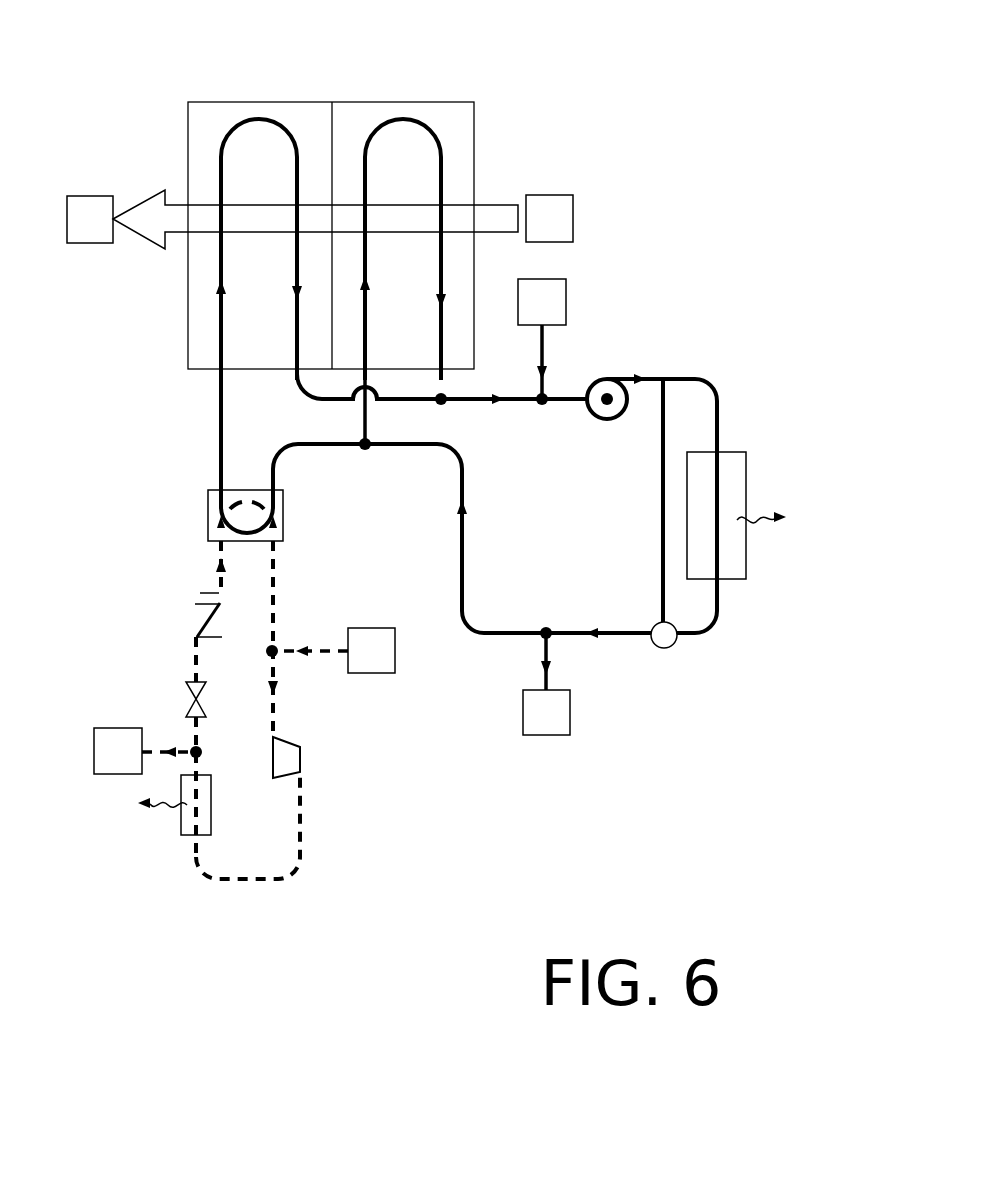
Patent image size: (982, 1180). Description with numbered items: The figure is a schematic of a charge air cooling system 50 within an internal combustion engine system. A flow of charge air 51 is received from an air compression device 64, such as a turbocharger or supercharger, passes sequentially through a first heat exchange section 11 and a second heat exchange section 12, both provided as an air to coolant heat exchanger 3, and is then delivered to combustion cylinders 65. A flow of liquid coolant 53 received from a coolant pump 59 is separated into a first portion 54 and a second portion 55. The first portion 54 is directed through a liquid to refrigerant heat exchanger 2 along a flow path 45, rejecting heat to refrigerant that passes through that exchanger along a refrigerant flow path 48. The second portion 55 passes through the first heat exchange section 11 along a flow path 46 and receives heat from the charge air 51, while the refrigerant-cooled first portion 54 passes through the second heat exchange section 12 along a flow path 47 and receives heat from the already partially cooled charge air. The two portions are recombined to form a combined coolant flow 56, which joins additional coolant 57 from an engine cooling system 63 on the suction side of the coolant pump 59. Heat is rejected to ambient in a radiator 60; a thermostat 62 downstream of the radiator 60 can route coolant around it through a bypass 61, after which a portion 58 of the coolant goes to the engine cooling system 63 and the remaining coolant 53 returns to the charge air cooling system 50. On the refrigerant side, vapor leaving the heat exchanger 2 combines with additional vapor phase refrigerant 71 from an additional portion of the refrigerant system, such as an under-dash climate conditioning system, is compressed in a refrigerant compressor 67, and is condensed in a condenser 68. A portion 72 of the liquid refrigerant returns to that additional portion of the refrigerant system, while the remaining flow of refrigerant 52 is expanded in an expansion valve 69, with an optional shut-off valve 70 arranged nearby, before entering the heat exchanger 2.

The liquid to refrigerant heat exchanger 2 is at (208, 512).
The air to coolant heat exchanger 3 is at (163, 125).
The first heat exchange section 11 is at (452, 113).
The second heat exchange section 12 is at (307, 112).
The flow path 45 is at (275, 502).
The flow path 46 is at (367, 313).
The flow path 47 is at (218, 315).
The refrigerant flow path 48 is at (243, 500).
The charge air cooling system 50 is at (678, 115).
The flow of charge air 51 is at (493, 215).
The flow of refrigerant 52 is at (197, 593).
The flow of liquid coolant 53 is at (467, 545).
The first portion of liquid coolant 54 is at (318, 447).
The second portion of liquid coolant 55 is at (370, 418).
The combined coolant flow 56 is at (485, 405).
The additional coolant 57 is at (547, 348).
The portion of coolant flow 58 is at (539, 653).
The coolant pump 59 is at (602, 378).
The radiator 60 is at (746, 470).
The bypass 61 is at (655, 507).
The thermostat 62 is at (673, 648).
The engine cooling system 63 is at (544, 507).
The air compression device 64 is at (549, 218).
The combustion cylinders 65 is at (90, 219).
The refrigerant compressor 67 is at (305, 752).
The condenser 68 is at (178, 836).
The expansion valve 69 is at (185, 700).
The shut-off valve 70 is at (195, 628).
The additional vapor phase refrigerant 71 is at (316, 646).
The portion of liquid refrigerant 72 is at (160, 745).